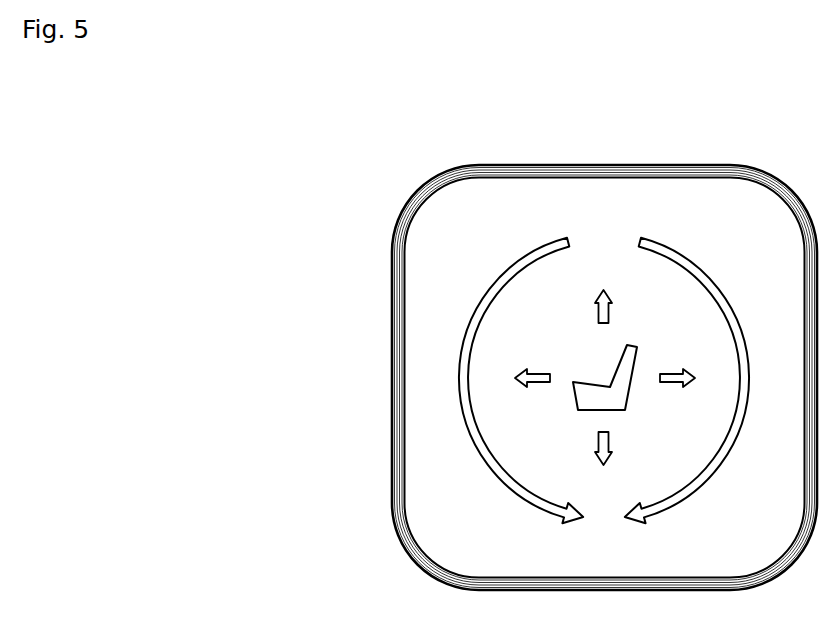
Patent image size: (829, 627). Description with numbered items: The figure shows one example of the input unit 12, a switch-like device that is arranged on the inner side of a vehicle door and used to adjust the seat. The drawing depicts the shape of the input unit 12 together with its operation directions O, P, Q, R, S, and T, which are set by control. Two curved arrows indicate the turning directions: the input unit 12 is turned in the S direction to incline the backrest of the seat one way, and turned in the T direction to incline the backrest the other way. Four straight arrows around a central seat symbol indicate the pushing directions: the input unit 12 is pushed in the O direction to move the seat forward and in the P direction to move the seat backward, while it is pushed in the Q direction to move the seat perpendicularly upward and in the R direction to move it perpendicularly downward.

The input unit 12 is at (602, 164).
The operation direction O is at (522, 378).
The operation direction P is at (685, 378).
The operation direction Q is at (603, 292).
The operation direction R is at (603, 463).
The operation direction S is at (521, 394).
The operation direction T is at (687, 394).